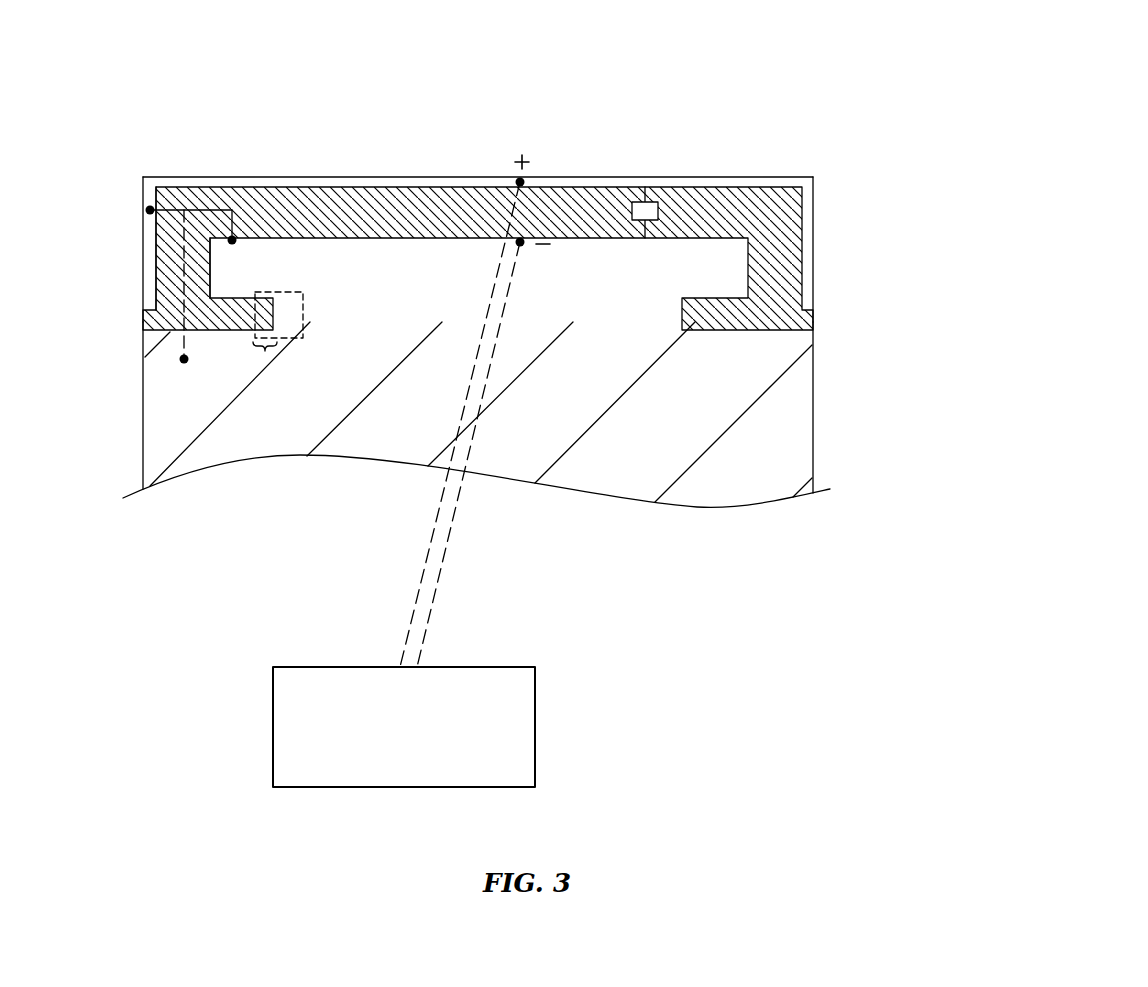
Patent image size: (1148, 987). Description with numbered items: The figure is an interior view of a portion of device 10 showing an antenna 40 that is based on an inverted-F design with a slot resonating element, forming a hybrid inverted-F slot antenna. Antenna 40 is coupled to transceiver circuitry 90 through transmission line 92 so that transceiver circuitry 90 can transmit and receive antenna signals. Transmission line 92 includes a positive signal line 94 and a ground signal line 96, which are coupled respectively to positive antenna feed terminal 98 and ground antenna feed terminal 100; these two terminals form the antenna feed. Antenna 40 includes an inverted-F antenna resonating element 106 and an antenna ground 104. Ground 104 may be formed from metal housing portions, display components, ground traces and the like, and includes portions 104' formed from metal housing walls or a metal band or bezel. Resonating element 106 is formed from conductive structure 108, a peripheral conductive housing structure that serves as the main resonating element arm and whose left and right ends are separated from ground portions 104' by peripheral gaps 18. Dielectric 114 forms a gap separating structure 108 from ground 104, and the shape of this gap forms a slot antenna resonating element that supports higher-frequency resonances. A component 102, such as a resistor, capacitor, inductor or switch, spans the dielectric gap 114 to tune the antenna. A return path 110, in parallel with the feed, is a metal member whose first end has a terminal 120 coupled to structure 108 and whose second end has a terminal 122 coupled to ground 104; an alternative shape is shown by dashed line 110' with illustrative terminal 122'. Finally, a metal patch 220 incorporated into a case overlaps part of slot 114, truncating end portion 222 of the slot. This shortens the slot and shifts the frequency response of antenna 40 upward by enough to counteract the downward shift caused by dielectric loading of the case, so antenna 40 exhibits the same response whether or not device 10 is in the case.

The electronic device 10 is at (841, 68).
The peripheral gaps 18 is at (133, 322).
The antenna 40 is at (897, 177).
The transceiver circuitry 90 is at (536, 716).
The transmission line path 92 is at (469, 560).
The positive signal line 94 is at (420, 583).
The ground signal line 96 is at (433, 590).
The positive antenna feed terminal 98 is at (517, 181).
The ground antenna feed terminal 100 is at (522, 244).
The component 102 is at (660, 210).
The antenna ground 104 is at (476, 414).
The ground portions 104' is at (486, 407).
The inverted-F antenna resonating element 106 is at (115, 180).
The conductive structure 108 is at (322, 182).
The return path 110 is at (200, 183).
The alternative return path 110' is at (207, 294).
The dielectric 114 is at (412, 210).
The terminal 120 is at (148, 208).
The terminal 122 is at (251, 261).
The illustrative terminal 122' is at (173, 387).
The metal patch 220 is at (303, 302).
The end portion 222 is at (265, 352).